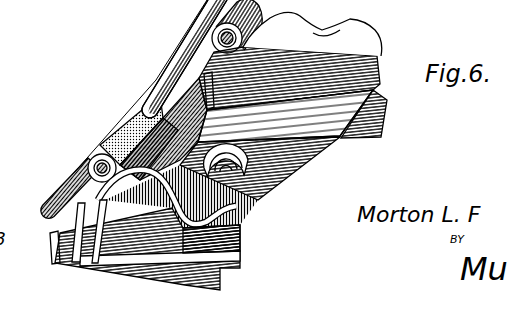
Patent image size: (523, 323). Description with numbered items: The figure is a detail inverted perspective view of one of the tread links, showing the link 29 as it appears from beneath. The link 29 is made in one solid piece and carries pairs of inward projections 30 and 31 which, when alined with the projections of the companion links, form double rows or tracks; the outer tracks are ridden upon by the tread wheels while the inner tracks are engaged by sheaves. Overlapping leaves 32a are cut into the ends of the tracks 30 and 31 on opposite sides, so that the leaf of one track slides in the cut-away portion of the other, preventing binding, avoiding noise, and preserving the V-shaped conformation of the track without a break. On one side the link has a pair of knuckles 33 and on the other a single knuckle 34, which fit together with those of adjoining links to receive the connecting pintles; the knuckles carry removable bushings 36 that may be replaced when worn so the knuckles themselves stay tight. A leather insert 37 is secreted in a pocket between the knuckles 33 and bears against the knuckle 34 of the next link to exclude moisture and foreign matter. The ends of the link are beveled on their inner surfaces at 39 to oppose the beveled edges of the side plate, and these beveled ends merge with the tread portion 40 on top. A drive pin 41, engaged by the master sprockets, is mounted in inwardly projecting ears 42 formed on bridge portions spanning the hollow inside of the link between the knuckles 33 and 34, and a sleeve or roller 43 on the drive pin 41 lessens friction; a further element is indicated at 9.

The roller shaft 9 is at (218, 25).
The link 29 is at (167, 59).
The inward projection 30 is at (137, 243).
The inward projection 31 is at (376, 105).
The overlapping leaves 32a is at (383, 123).
The knuckles 33 is at (177, 63).
The knuckle 34 is at (270, 200).
The bushings 36 is at (215, 37).
The leather insert 37 is at (119, 127).
The beveled surface 39 is at (371, 49).
The tread portion 40 is at (362, 16).
The drive pin 41 is at (228, 160).
The ears 42 is at (240, 257).
The sleeve or roller 43 is at (236, 236).